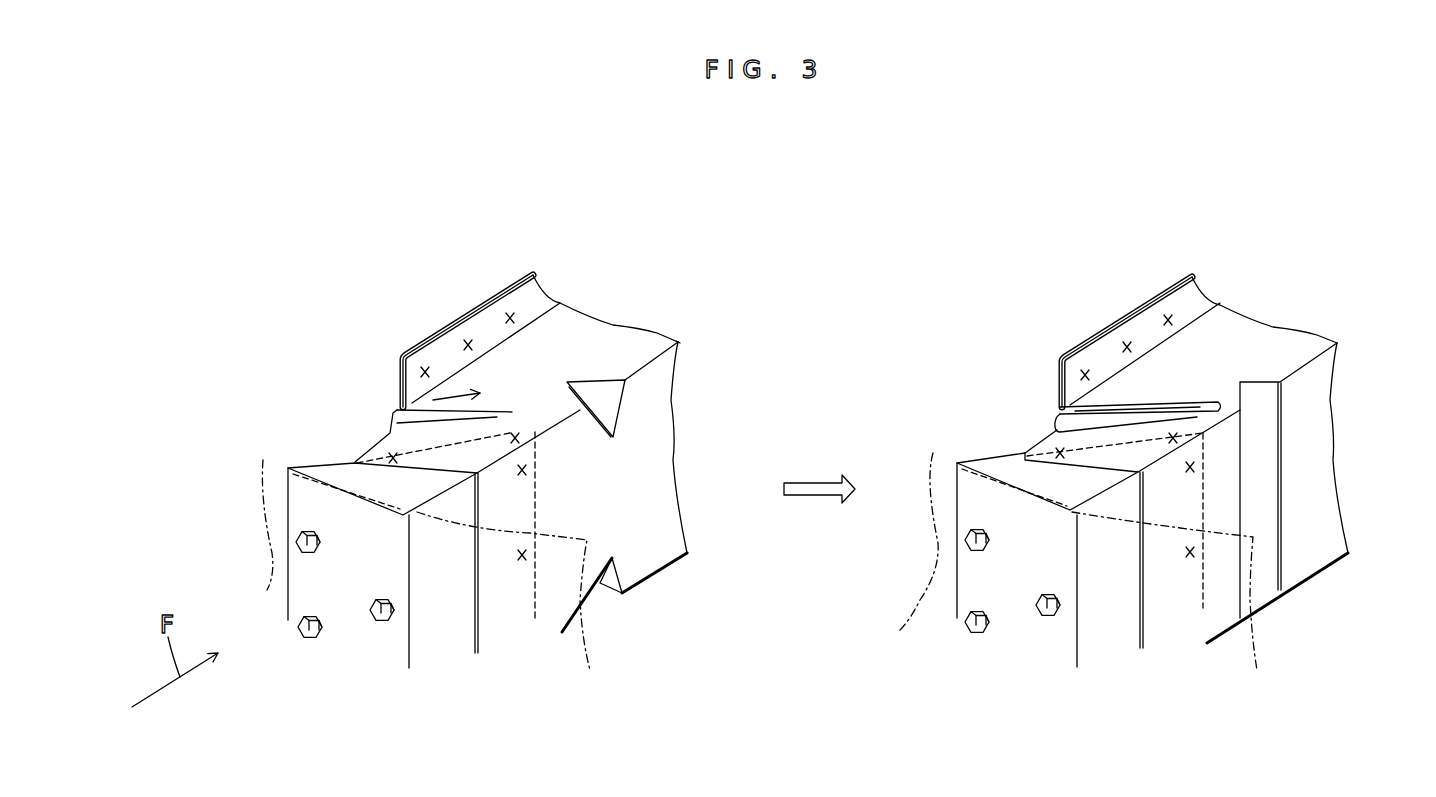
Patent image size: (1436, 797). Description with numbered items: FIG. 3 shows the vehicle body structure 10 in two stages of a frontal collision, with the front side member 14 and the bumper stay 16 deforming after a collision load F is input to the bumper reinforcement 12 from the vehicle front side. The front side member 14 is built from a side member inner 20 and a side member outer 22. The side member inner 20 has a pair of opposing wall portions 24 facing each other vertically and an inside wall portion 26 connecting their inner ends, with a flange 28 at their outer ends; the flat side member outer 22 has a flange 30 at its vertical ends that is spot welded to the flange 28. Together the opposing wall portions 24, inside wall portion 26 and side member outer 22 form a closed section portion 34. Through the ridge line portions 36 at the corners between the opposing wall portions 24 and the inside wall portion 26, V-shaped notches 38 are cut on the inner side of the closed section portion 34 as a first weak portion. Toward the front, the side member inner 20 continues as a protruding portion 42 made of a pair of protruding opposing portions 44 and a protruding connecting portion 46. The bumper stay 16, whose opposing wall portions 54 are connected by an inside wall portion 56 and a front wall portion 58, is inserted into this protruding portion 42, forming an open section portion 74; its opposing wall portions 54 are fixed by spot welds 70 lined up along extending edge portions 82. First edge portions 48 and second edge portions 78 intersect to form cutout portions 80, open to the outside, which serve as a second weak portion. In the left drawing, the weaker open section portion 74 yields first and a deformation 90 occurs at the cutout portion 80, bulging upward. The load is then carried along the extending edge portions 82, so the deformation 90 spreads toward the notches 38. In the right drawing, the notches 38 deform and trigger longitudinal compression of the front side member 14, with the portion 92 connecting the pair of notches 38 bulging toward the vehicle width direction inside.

The vehicle body structure 10 is at (390, 210).
The bumper reinforcement 12 is at (267, 553).
The front side member 14 is at (580, 186).
The bumper stay 16 is at (450, 632).
The side member inner 20 is at (573, 306).
The side member outer 22 is at (515, 274).
The opposing wall portions 24 is at (627, 335).
The inside wall portion 26 is at (677, 427).
The flange 28 is at (488, 323).
The flange 30 is at (447, 330).
The closed section portion 34 is at (657, 547).
The ridge line portions 36 is at (670, 337).
The notches 38 is at (600, 397).
The protruding portion 42 is at (472, 582).
The protruding opposing portions 44 is at (447, 458).
The protruding connecting portion 46 is at (503, 607).
The first edge portions 48 is at (397, 413).
The opposing wall portions 54 is at (287, 466).
The inside wall portion 56 is at (427, 625).
The front wall portion 58 is at (350, 612).
The welds 70 is at (355, 462).
The open section portion 74 is at (523, 590).
The second edge portions 78 is at (348, 456).
The cutout portions 80 is at (283, 337).
The extending edge portions 82 is at (503, 397).
The deformation 90 is at (398, 410).
The portion connecting the notches 92 is at (1262, 502).